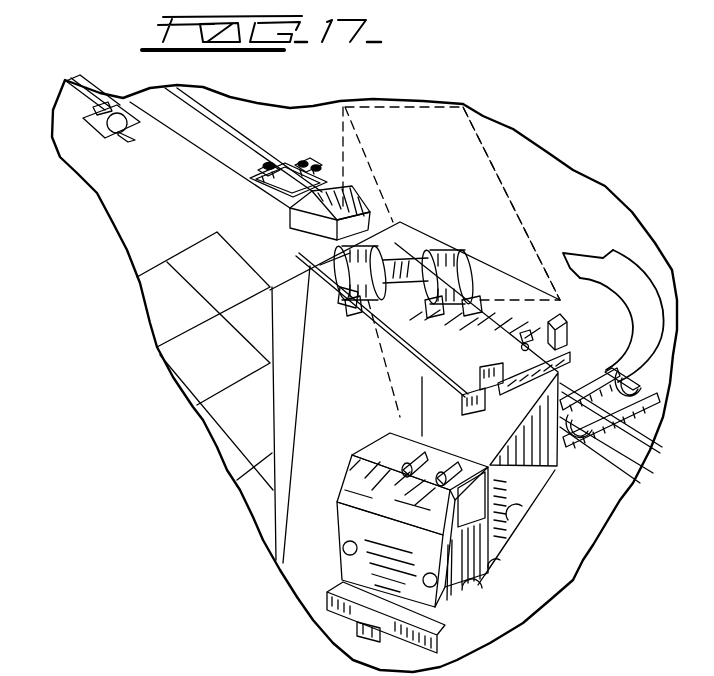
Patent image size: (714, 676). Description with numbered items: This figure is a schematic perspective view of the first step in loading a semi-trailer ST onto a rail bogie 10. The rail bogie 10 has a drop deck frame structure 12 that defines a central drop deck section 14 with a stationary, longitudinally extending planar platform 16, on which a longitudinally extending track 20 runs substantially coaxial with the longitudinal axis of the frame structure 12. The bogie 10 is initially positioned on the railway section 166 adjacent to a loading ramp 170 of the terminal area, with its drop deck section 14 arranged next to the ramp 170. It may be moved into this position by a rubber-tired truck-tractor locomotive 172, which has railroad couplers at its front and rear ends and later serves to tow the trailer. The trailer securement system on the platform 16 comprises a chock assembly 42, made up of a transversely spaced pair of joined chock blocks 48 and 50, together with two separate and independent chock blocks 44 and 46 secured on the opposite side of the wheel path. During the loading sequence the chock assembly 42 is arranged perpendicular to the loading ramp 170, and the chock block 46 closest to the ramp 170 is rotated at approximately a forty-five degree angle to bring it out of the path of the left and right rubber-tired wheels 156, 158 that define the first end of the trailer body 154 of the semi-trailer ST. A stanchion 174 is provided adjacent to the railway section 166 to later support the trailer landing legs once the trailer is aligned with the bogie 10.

The rail bogie 10 is at (300, 211).
The drop deck frame structure 12 is at (587, 364).
The central drop deck section 14 is at (316, 288).
The platform 16 is at (400, 344).
The track 20 is at (482, 333).
The chock assembly 42 is at (395, 264).
The chock block 44 is at (563, 334).
The chock block 46 is at (477, 406).
The chock block 48 is at (332, 266).
The chock block 50 is at (478, 278).
The trailer body 154 is at (505, 207).
The left rubber-tired wheel 156 is at (353, 280).
The right rubber-tired wheel 158 is at (470, 266).
The railway section 166 is at (189, 150).
The loading ramp 170 is at (348, 419).
The truck-tractor locomotive 172 is at (440, 600).
The stanchion 174 is at (118, 143).
The semi-trailer ST is at (494, 160).